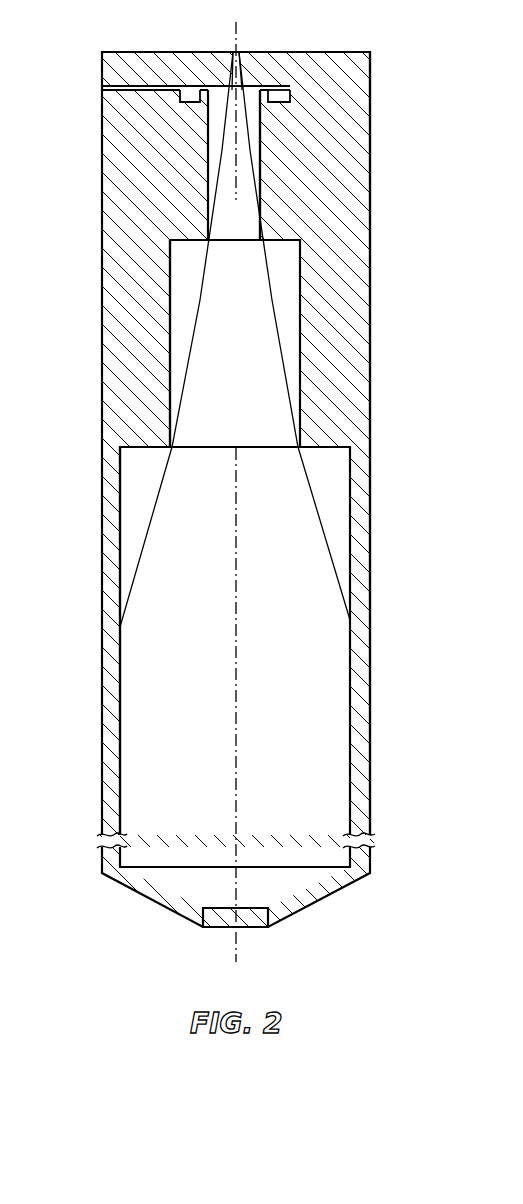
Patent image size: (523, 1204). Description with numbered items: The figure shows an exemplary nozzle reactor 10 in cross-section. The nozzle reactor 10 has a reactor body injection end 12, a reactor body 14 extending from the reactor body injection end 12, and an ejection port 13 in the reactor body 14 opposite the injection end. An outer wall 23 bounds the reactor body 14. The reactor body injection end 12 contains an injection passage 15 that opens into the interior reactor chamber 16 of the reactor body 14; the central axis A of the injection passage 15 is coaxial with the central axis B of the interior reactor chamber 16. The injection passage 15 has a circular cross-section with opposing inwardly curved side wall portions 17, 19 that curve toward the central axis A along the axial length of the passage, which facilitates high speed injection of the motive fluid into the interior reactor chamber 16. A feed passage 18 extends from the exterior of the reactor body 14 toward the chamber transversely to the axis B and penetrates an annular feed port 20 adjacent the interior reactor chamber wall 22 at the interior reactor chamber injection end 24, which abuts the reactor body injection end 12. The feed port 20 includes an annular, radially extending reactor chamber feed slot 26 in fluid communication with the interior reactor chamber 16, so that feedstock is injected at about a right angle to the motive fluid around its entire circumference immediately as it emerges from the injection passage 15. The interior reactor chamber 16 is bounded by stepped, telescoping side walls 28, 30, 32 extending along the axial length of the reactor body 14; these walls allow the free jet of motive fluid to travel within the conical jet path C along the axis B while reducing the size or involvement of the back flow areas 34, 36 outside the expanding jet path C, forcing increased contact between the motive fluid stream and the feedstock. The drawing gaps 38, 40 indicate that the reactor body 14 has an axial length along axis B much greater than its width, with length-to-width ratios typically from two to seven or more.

The nozzle reactor 10 is at (407, 186).
The reactor body injection end 12 is at (278, 62).
The ejection port 13 is at (250, 928).
The reactor body 14 is at (371, 422).
The injection passage 15 is at (233, 70).
The interior reactor chamber 16 is at (297, 655).
The inwardly curved side wall portion 17 is at (222, 62).
The feed passage 18 is at (130, 89).
The inwardly curved side wall portion 19 is at (240, 58).
The annular feed port 20 is at (184, 100).
The interior reactor chamber wall 22 is at (258, 125).
The outer wall 23 is at (371, 113).
The interior reactor chamber injection end 24 is at (291, 96).
The reactor chamber feed slot 26 is at (272, 84).
The stepped side wall 28 is at (213, 180).
The stepped side wall 30 is at (178, 331).
The stepped side wall 32 is at (132, 497).
The back flow area 34 is at (285, 290).
The back flow area 36 is at (132, 538).
The drawing gap 38 is at (102, 840).
The drawing gap 40 is at (372, 840).
The central axis of the injection passage A is at (233, 40).
The central axis of the interior reactor chamber B is at (240, 778).
The conical jet path C is at (290, 366).